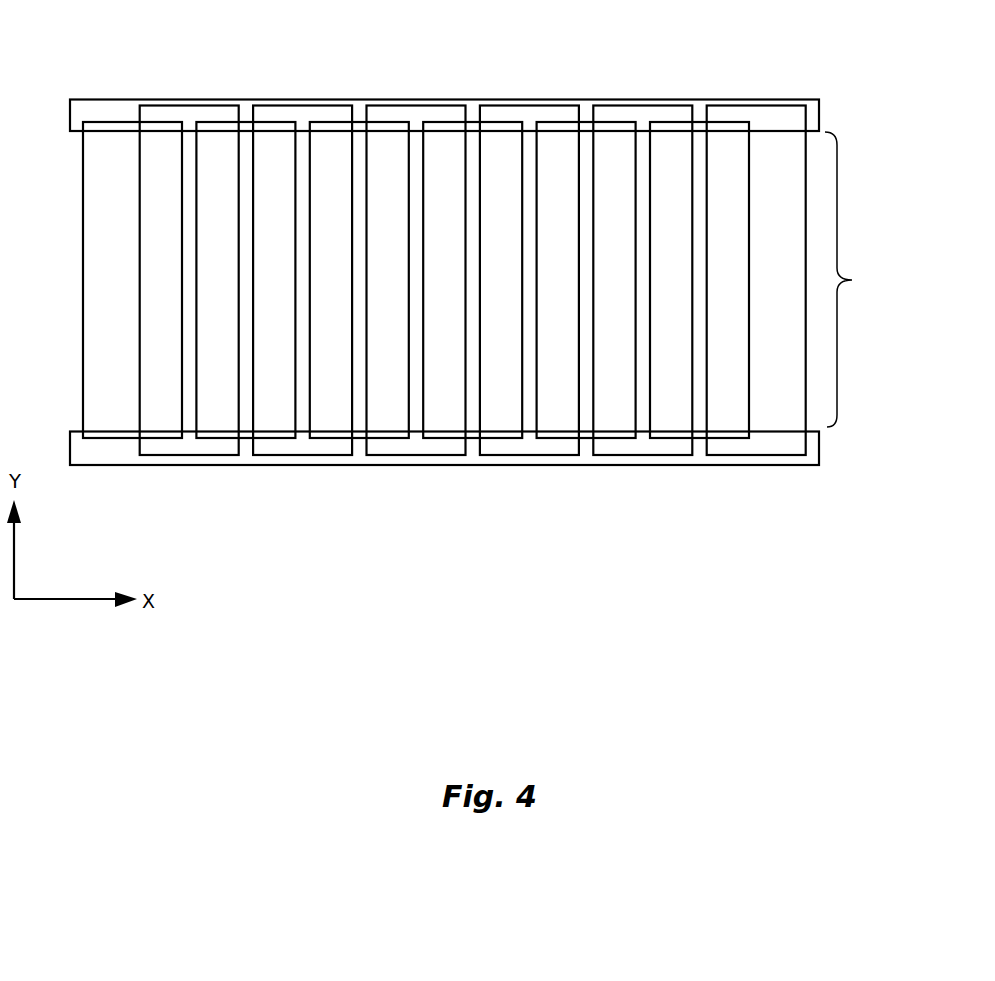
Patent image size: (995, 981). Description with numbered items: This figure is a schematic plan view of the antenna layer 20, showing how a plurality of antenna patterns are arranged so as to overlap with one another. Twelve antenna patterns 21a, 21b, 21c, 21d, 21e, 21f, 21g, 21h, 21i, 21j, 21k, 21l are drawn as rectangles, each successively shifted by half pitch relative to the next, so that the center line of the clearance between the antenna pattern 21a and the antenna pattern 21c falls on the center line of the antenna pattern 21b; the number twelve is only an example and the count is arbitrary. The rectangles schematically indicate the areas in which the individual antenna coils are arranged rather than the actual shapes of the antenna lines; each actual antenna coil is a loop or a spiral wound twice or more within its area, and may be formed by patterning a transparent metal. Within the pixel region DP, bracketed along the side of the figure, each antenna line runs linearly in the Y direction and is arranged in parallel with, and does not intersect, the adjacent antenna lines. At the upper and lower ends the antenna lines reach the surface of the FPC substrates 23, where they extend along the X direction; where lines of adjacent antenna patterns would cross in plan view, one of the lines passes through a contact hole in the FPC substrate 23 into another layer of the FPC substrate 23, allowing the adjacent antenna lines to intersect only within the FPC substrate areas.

The antenna layer 20 is at (476, 271).
The antenna pattern 21a is at (105, 440).
The antenna pattern 21b is at (172, 457).
The antenna pattern 21c is at (218, 440).
The antenna pattern 21d is at (285, 457).
The antenna pattern 21e is at (332, 440).
The antenna pattern 21f is at (398, 457).
The antenna pattern 21g is at (445, 440).
The antenna pattern 21h is at (512, 457).
The antenna pattern 21i is at (559, 440).
The antenna pattern 21j is at (625, 457).
The antenna pattern 21k is at (672, 440).
The antenna pattern 21l is at (739, 457).
The FPC substrate 23 is at (813, 117).
The pixel region DP is at (857, 279).